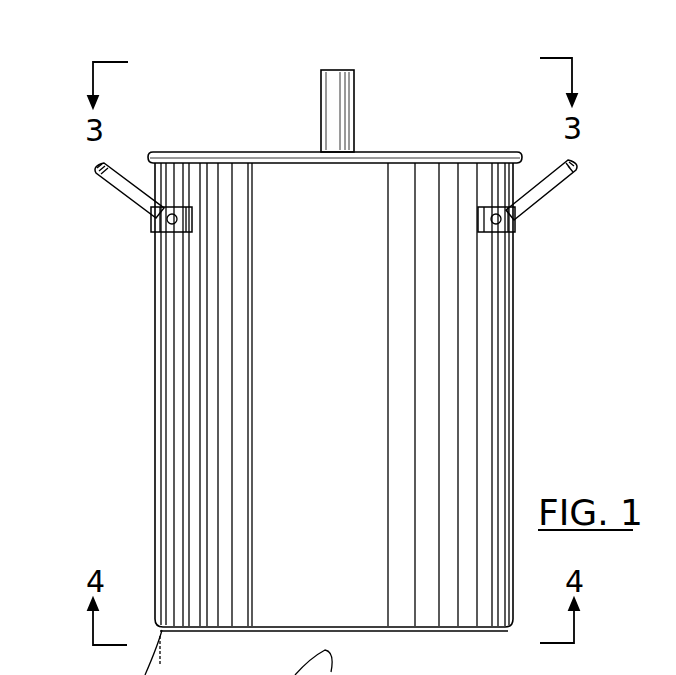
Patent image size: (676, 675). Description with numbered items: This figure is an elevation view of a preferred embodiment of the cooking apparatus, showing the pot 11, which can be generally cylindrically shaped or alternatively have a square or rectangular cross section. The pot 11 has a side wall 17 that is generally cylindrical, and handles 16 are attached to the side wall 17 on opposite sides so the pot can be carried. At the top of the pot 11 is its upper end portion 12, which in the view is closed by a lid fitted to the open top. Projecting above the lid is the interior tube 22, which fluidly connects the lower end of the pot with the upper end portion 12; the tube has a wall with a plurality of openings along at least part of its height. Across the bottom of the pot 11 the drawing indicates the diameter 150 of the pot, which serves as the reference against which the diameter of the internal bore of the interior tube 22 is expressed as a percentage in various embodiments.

The pot 11 is at (88, 427).
The upper end portion 12 is at (513, 157).
The handles 16 is at (127, 190).
The side wall 17 is at (318, 431).
The interior tube 22 is at (345, 113).
The diameter 150 is at (170, 651).